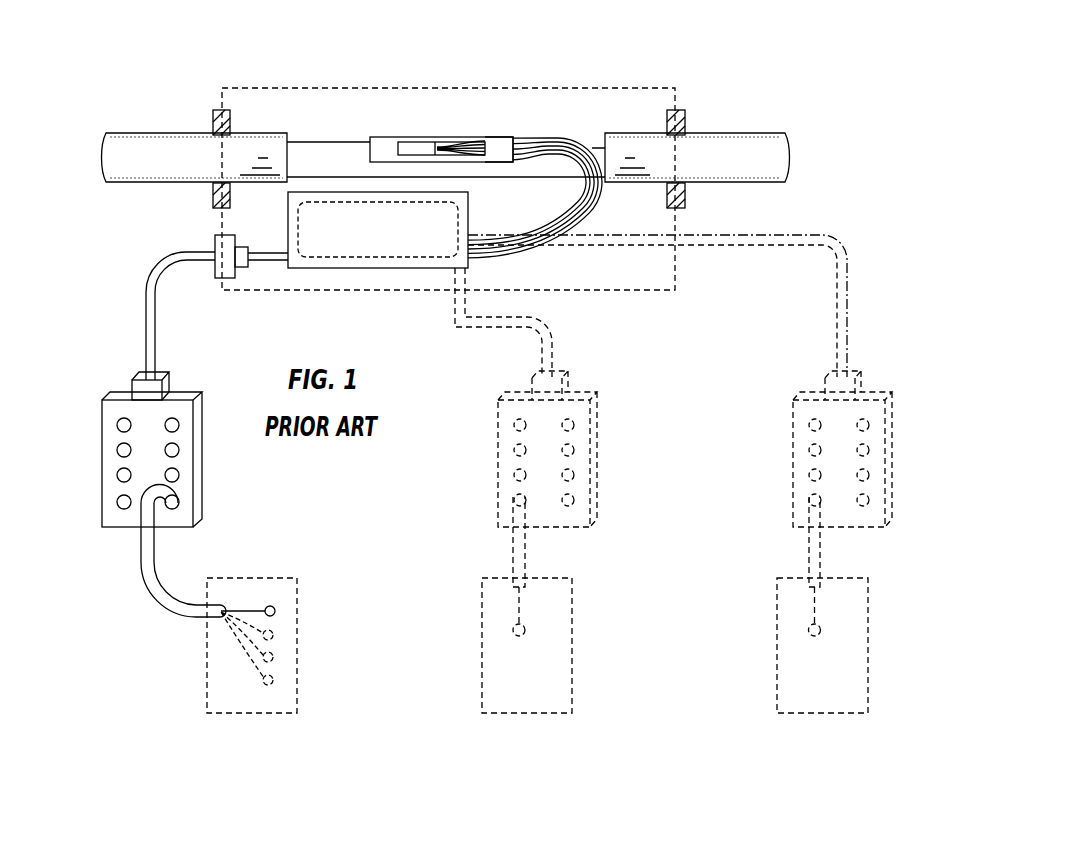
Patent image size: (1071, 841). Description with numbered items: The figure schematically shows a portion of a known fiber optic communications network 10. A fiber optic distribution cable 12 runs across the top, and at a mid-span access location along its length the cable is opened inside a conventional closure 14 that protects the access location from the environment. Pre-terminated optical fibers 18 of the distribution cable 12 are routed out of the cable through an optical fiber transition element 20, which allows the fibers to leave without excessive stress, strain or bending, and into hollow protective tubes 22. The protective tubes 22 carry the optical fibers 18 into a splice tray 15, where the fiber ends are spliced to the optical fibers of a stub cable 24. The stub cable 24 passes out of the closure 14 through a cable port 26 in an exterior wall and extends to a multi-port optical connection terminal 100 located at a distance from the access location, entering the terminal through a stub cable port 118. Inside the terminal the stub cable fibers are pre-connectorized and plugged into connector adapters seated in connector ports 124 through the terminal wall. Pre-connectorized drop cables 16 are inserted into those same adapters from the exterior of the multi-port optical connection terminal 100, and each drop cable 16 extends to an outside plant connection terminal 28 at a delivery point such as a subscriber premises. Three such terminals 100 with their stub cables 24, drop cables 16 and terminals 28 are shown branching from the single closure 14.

The fiber optic communications network 10 is at (667, 62).
The fiber optic distribution cable 12 is at (150, 133).
The closure 14 is at (626, 291).
The splice tray 15 is at (287, 228).
The drop cable 16 is at (140, 577).
The optical fibers 18 is at (468, 138).
The optical fiber transition element 20 is at (384, 138).
The hollow protective tubes 22 is at (598, 212).
The stub cable 24 is at (150, 288).
The cable port 26 is at (226, 279).
The outside plant connection terminal 28 is at (297, 582).
The multi-port optical connection terminal 100 is at (102, 430).
The stub cable port 118 is at (131, 393).
The connector ports 124 is at (118, 505).